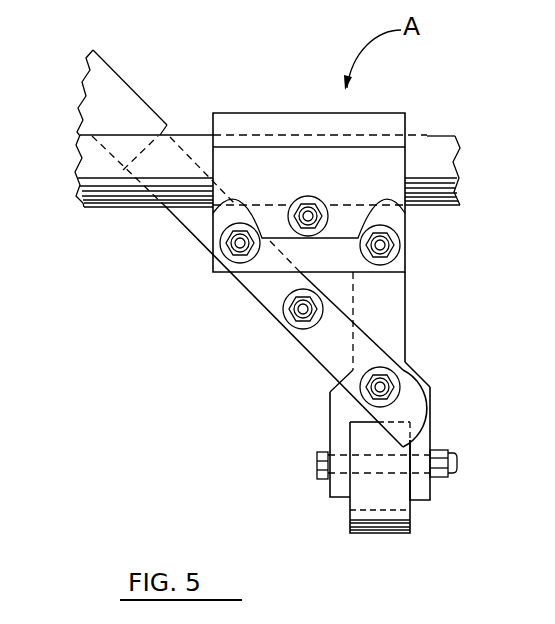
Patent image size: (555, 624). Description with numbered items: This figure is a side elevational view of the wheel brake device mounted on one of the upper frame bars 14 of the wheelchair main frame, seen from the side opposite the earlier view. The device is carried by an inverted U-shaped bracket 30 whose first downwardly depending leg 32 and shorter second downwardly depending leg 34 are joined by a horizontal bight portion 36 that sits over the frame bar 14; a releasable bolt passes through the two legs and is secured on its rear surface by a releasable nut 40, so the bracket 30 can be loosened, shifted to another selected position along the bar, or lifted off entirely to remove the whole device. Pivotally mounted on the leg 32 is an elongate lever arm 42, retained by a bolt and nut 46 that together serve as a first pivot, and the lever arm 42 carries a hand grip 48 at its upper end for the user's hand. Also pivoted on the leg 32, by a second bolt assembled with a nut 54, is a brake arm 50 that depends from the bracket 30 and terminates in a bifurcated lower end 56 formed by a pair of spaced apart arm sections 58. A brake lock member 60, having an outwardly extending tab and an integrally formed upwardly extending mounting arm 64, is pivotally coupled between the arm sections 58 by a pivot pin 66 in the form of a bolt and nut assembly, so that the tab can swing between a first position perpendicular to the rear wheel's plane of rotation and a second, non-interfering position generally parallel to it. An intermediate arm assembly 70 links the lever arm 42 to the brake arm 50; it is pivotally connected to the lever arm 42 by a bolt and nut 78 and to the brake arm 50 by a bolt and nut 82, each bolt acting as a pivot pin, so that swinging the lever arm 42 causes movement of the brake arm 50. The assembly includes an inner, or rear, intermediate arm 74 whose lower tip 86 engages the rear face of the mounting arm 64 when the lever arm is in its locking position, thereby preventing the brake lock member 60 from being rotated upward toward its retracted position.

The upper frame bars 14 is at (200, 138).
The U-shaped bracket 30 is at (293, 112).
The first downwardly depending leg 32 is at (333, 256).
The second downwardly depending leg 34 is at (393, 163).
The horizontal bight portion 36 is at (242, 113).
The releasable nut 40 is at (306, 197).
The elongate lever arm 42 is at (190, 220).
The nut 46 is at (236, 266).
The hand grip 48 is at (108, 78).
The brake arm 50 is at (380, 292).
The nut 54 is at (393, 247).
The bifurcated lower end 56 is at (317, 427).
The arm sections 58 is at (337, 437).
The brake lock member 60 is at (365, 537).
The mounting arm 64 is at (387, 493).
The pivot pin 66 is at (438, 440).
The intermediate arm assembly 70 is at (292, 344).
The inner intermediate arm 74 is at (363, 352).
The nut 78 is at (287, 313).
The nut 82 is at (395, 382).
The lower tip 86 is at (403, 438).